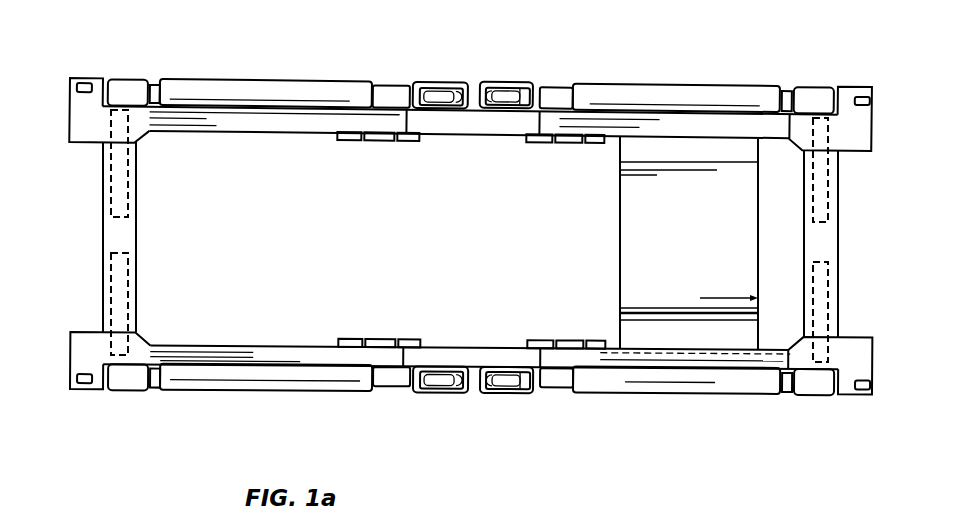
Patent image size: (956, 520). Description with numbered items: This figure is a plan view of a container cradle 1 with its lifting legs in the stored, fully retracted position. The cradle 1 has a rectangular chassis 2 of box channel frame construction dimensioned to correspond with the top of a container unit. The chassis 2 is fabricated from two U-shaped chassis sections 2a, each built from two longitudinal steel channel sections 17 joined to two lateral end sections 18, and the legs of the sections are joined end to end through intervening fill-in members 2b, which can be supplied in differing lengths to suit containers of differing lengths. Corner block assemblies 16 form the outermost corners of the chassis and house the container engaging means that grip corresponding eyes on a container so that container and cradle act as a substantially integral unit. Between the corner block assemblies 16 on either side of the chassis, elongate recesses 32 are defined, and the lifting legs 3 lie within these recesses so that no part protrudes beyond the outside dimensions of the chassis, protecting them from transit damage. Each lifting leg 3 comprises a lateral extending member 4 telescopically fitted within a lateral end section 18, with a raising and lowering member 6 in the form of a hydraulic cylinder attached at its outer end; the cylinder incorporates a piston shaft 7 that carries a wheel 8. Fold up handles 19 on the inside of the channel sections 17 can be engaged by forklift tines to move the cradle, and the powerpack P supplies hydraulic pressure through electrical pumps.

The cradle 1 is at (771, 80).
The chassis 2 is at (712, 119).
The U-shaped chassis section 2a is at (242, 347).
The fill-in member 2b is at (480, 120).
The lifting leg 3 is at (190, 80).
The lateral extending member 4 is at (140, 212).
The raising and lowering member 6 is at (222, 92).
The piston shaft 7 is at (382, 90).
The wheel 8 is at (487, 84).
The corner block assembly 16 is at (90, 120).
The longitudinal steel channel section 17 is at (175, 350).
The lateral end section 18 is at (115, 232).
The fold up handle 19 is at (387, 140).
The elongate recess 32 is at (298, 367).
The powerpack P is at (689, 213).